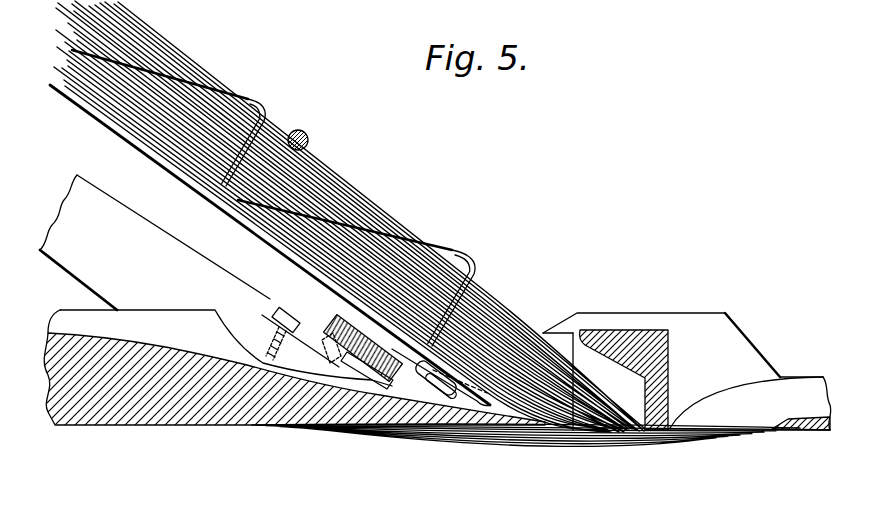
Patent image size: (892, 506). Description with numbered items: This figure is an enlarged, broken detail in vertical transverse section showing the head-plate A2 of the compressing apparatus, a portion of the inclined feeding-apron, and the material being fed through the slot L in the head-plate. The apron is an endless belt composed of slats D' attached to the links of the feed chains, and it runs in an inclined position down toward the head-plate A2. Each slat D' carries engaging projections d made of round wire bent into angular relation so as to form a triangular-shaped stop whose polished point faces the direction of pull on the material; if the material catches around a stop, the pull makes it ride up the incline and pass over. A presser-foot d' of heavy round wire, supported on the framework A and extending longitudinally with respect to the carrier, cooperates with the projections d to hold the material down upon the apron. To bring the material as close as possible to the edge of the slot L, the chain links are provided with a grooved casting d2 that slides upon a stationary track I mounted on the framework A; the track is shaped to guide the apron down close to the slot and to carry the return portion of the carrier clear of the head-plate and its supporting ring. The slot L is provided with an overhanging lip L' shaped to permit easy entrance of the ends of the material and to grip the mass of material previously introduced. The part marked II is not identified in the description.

The framework A is at (155, 242).
The head-plate A2 is at (157, 413).
The slat D' is at (270, 245).
The track I is at (372, 338).
The engaging projection d is at (278, 198).
The presser-foot d' is at (318, 129).
The grooved casting d2 is at (378, 374).
The slide II is at (434, 392).
The slot L is at (526, 455).
The overhanging lip L' is at (687, 354).